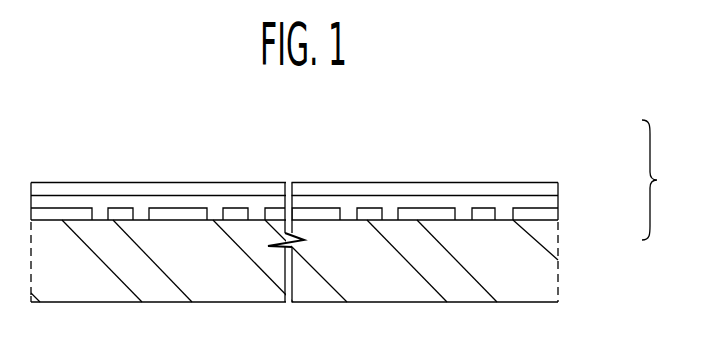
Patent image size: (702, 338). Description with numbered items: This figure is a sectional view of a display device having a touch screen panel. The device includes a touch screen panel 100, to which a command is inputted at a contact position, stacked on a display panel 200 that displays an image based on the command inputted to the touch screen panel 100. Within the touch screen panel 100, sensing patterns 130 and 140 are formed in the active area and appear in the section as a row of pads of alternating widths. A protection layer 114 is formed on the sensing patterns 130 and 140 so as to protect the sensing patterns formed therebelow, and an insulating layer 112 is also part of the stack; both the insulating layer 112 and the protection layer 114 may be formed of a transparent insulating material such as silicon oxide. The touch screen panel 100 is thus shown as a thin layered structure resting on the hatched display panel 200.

The touch screen panel 100 is at (668, 180).
The insulating layer 112 is at (558, 213).
The protection layer 114 is at (558, 182).
The sensing pattern 130 is at (426, 206).
The sensing pattern 140 is at (483, 210).
The display panel 200 is at (552, 268).